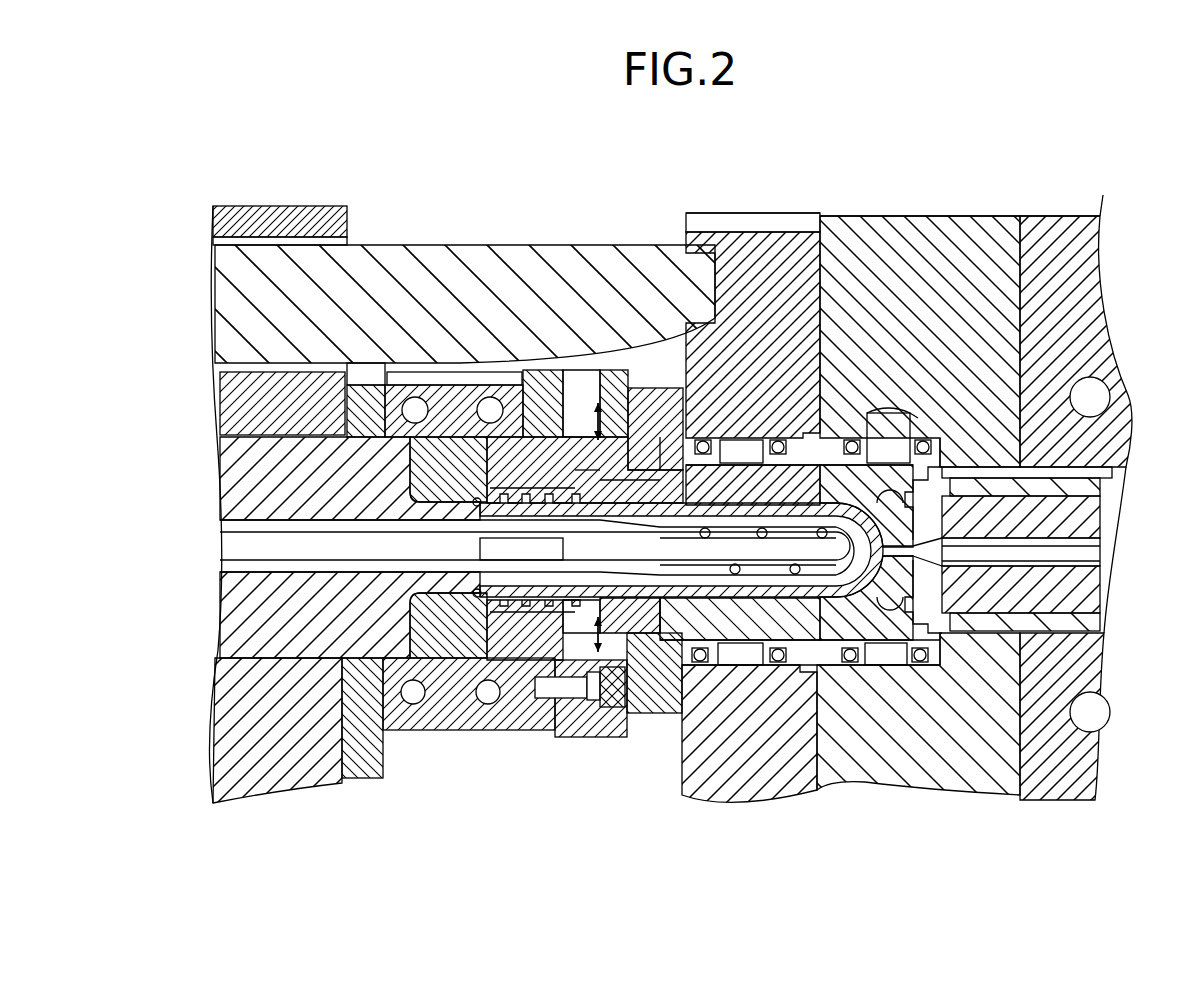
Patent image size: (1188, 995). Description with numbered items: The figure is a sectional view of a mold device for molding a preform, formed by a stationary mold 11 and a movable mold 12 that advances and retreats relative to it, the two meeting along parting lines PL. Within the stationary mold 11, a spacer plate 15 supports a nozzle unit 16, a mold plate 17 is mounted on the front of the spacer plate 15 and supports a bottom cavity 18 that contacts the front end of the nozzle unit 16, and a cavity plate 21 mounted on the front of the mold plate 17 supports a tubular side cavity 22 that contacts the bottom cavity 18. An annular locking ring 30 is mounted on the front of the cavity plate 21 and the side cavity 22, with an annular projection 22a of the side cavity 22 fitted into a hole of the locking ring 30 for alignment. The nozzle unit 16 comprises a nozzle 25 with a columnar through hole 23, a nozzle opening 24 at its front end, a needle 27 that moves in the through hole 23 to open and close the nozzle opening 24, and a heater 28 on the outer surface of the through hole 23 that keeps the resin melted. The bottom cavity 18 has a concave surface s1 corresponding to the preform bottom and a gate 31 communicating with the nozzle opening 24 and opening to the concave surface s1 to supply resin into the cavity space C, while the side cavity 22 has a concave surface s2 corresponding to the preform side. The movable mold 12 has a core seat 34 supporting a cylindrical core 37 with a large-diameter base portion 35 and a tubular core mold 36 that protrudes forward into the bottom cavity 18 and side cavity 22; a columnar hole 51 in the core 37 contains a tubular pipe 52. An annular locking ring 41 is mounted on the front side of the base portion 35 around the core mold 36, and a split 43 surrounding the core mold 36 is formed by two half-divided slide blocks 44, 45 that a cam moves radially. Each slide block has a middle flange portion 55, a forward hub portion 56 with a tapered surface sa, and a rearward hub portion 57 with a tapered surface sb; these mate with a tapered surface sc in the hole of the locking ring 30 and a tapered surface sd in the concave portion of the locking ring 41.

The stationary mold 11 is at (818, 197).
The movable mold 12 is at (241, 200).
The spacer plate 15 is at (1080, 770).
The nozzle unit 16 is at (1085, 492).
The mold plate 17 is at (945, 765).
The bottom cavity 18 is at (950, 465).
The cavity plate 21 is at (787, 765).
The side cavity 22 is at (823, 470).
The annular projection 22a is at (807, 507).
The through hole 23 is at (1090, 543).
The nozzle opening 24 is at (1042, 440).
The nozzle 25 is at (1090, 590).
The needle 27 is at (1085, 557).
The heater 28 is at (1093, 447).
The locking ring 30 is at (686, 405).
The gate 31 is at (920, 560).
The core seat 34 is at (225, 703).
The base portion 35 is at (228, 463).
The core mold 36 is at (620, 660).
The cylindrical core 37 is at (318, 632).
The locking ring 41 is at (437, 453).
The split 43 is at (640, 488).
The slide block 44 is at (617, 163).
The slide block 45 is at (557, 700).
The columnar hole 51 is at (228, 563).
The tubular pipe 52 is at (228, 530).
The flange portion 55 is at (580, 385).
The hub portion 56 is at (615, 393).
The hub portion 57 is at (523, 488).
The cavity space C is at (937, 455).
The parting lines PL is at (665, 633).
The concave surface s1 is at (880, 465).
The concave surface s2 is at (748, 465).
The tapered surface sa is at (672, 403).
The tapered surface sb is at (507, 607).
The tapered surface sc is at (777, 467).
The tapered surface sd is at (488, 497).